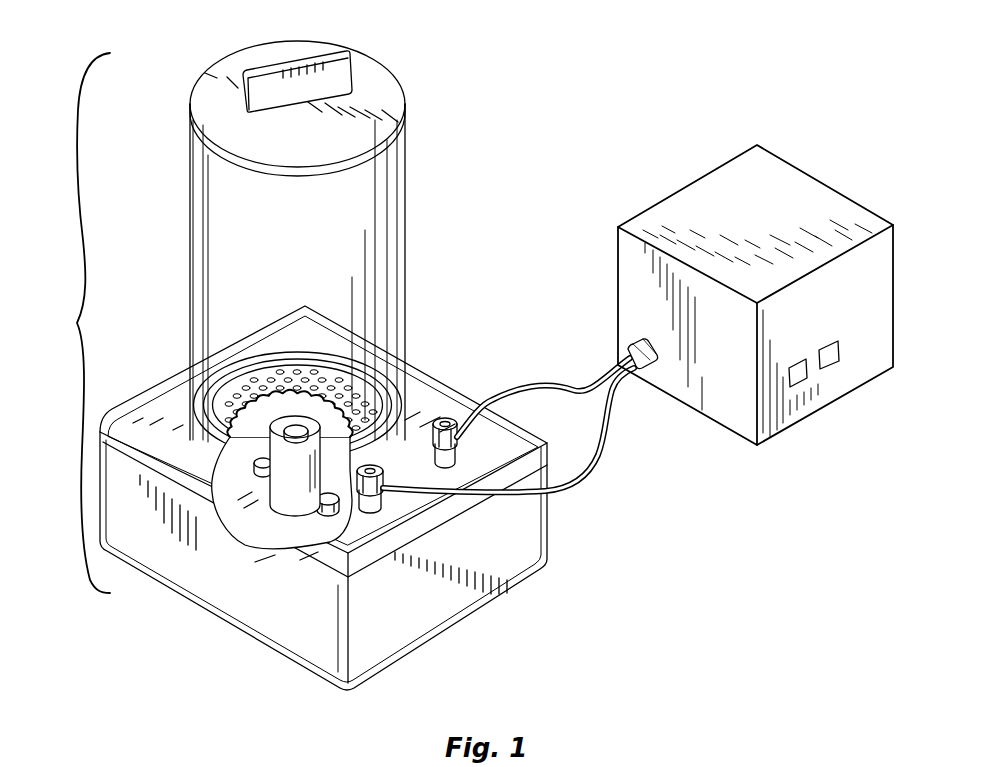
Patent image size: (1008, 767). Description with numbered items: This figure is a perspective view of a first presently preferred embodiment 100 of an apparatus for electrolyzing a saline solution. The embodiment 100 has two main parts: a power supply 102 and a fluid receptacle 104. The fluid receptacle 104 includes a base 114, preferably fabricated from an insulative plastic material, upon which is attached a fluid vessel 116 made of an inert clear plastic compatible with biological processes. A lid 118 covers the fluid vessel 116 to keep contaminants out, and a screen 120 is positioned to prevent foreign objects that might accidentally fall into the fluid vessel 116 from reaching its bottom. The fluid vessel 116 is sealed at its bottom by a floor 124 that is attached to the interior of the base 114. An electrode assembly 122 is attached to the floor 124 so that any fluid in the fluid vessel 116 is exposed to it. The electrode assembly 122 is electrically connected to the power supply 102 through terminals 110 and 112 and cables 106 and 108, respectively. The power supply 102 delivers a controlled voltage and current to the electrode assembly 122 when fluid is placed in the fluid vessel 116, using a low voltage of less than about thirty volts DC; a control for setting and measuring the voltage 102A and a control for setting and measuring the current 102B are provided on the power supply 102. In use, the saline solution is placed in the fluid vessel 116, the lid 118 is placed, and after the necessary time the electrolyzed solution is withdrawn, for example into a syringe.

The first presently preferred embodiment 100 is at (547, 132).
The power supply 102 is at (866, 307).
The control for setting and measuring the voltage 102A is at (797, 385).
The control for setting and measuring the current 102B is at (830, 368).
The fluid receptacle 104 is at (73, 323).
The cable 106 is at (610, 452).
The cable 108 is at (534, 380).
The terminal 110 is at (371, 510).
The terminal 112 is at (447, 420).
The base 114 is at (530, 545).
The fluid vessel 116 is at (343, 246).
The lid 118 is at (373, 87).
The screen 120 is at (358, 366).
The electrode assembly 122 is at (273, 513).
The floor 124 is at (305, 525).